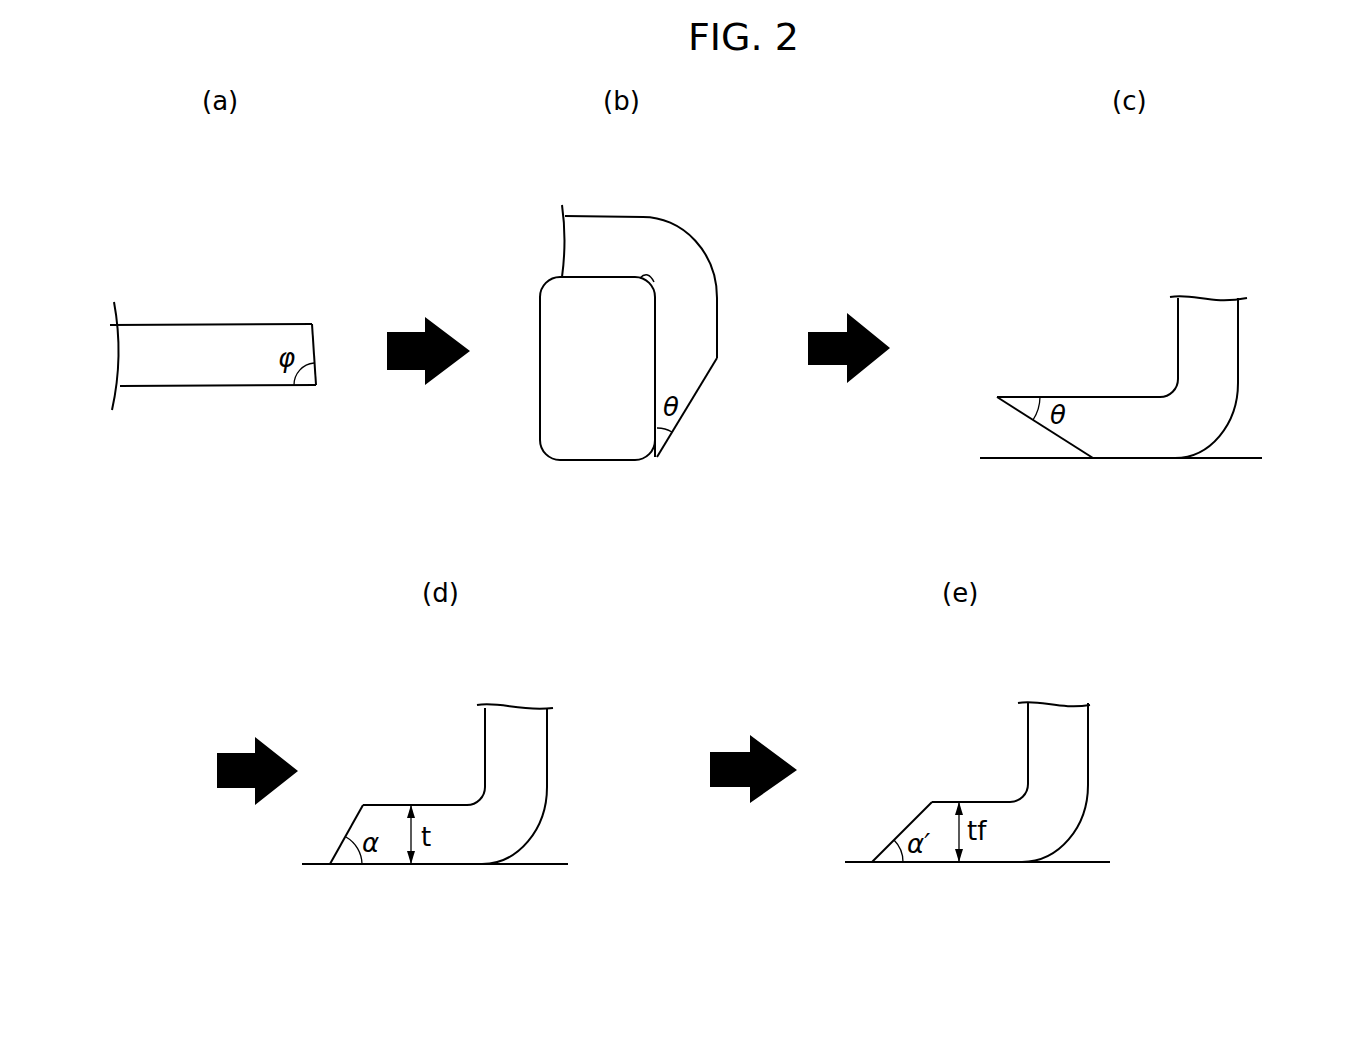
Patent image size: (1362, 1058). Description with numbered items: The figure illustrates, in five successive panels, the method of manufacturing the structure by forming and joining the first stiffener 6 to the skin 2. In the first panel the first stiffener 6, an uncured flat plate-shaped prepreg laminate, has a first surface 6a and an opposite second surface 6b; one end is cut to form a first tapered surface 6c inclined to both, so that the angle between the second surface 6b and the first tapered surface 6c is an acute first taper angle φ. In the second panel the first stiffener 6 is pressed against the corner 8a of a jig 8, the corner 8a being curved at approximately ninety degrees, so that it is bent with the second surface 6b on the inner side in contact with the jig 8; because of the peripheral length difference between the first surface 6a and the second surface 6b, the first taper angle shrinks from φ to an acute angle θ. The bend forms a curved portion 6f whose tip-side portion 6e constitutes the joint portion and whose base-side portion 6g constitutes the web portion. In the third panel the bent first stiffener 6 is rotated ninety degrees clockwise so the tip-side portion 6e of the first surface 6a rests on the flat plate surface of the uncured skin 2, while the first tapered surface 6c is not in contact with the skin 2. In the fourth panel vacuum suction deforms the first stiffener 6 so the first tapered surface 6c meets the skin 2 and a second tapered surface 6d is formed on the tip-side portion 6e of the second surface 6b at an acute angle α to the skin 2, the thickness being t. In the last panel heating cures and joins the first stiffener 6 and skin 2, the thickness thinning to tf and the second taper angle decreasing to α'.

The skin 2 is at (1240, 455).
The first stiffener 6 is at (249, 267).
The first surface 6a is at (162, 325).
The second surface 6b is at (190, 387).
The first tapered surface 6c is at (315, 350).
The second tapered surface 6d is at (350, 823).
The tip-side portion 6e is at (698, 338).
The curved portion 6f is at (680, 258).
The base-side portion 6g is at (593, 222).
The jig 8 is at (556, 422).
The corner 8a is at (643, 283).